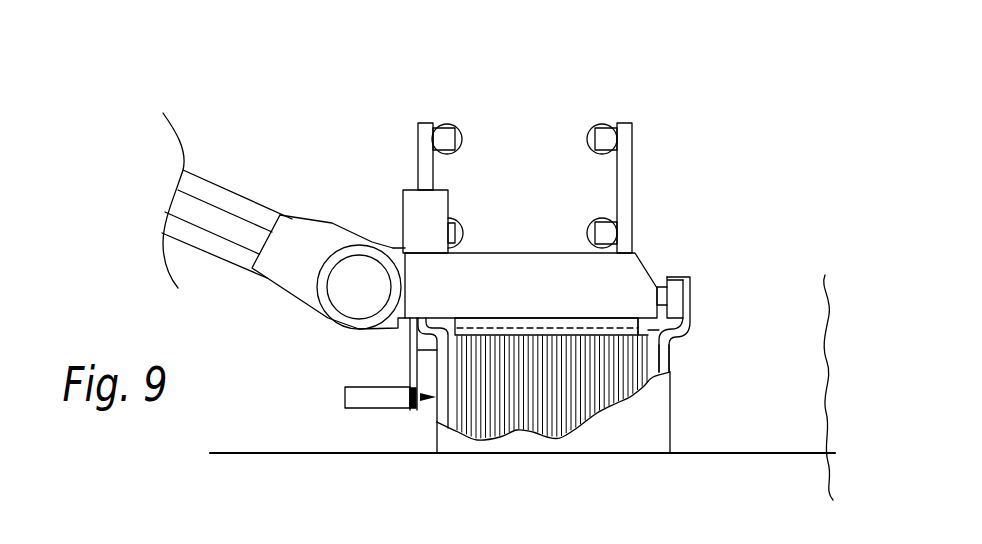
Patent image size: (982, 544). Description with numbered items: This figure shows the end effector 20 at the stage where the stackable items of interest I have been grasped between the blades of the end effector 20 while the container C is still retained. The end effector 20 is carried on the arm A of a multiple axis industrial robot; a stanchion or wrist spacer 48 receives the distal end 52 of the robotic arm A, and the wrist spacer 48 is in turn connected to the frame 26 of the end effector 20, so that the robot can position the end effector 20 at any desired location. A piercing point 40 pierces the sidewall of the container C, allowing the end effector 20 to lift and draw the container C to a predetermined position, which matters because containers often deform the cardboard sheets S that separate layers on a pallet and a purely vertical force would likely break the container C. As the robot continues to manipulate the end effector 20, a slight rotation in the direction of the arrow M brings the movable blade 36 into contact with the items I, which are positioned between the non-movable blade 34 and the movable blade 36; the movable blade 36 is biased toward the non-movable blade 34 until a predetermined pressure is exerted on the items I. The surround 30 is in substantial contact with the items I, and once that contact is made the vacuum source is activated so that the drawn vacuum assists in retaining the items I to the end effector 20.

The end effector 20 is at (388, 88).
The arm A is at (203, 220).
The distal end 52 is at (303, 235).
The wrist spacer 48 is at (397, 248).
The surround 30 is at (532, 330).
The frame 26 is at (632, 283).
The movable blade 36 is at (668, 360).
The non-movable blade 34 is at (433, 408).
The piercing point 40 is at (410, 387).
The items of interest I is at (562, 437).
The container C is at (618, 433).
The arrow M is at (740, 370).
The cardboard sheets S is at (796, 387).